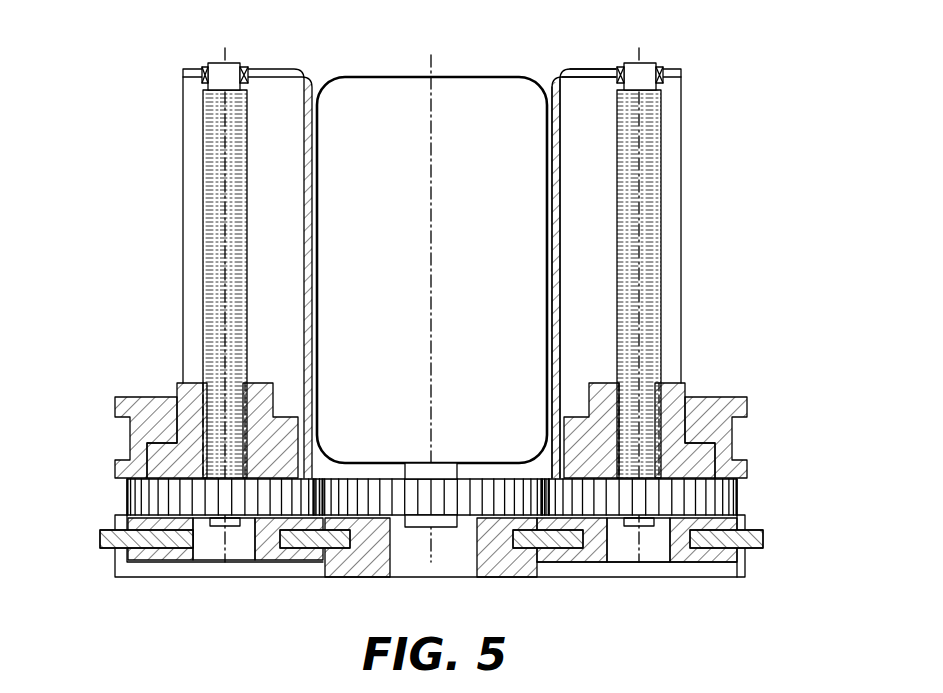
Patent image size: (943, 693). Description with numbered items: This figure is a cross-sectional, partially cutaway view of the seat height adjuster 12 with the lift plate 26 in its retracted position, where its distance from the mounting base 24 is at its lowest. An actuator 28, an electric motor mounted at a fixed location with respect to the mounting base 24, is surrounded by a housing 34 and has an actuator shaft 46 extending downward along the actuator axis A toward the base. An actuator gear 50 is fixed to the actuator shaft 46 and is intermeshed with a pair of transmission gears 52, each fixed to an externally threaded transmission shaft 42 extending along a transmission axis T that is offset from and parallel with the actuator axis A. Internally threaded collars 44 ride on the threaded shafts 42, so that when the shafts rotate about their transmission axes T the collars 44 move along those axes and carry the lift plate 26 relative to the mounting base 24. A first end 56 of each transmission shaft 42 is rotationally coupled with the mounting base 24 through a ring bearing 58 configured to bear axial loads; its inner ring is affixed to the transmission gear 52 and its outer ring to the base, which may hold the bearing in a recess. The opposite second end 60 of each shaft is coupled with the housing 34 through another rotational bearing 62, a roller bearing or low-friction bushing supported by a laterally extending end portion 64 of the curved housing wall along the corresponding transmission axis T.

The seat height adjuster 12 is at (112, 157).
The transmission axis T is at (228, 80).
The actuator 28 is at (352, 105).
The actuator axis A is at (427, 183).
The transmission shaft 42 is at (203, 248).
The housing 34 is at (558, 76).
The second end 60 is at (632, 70).
The rotational bearing 62 is at (663, 73).
The laterally extending end portion 64 is at (598, 79).
The lift plate 26 is at (118, 408).
The collar 44 is at (187, 388).
The actuator gear 50 is at (513, 480).
The actuator shaft 46 is at (438, 528).
The transmission gear 52 is at (738, 493).
The rotational bearing 58 is at (763, 538).
The first end 56 is at (643, 522).
The mounting base 24 is at (118, 570).